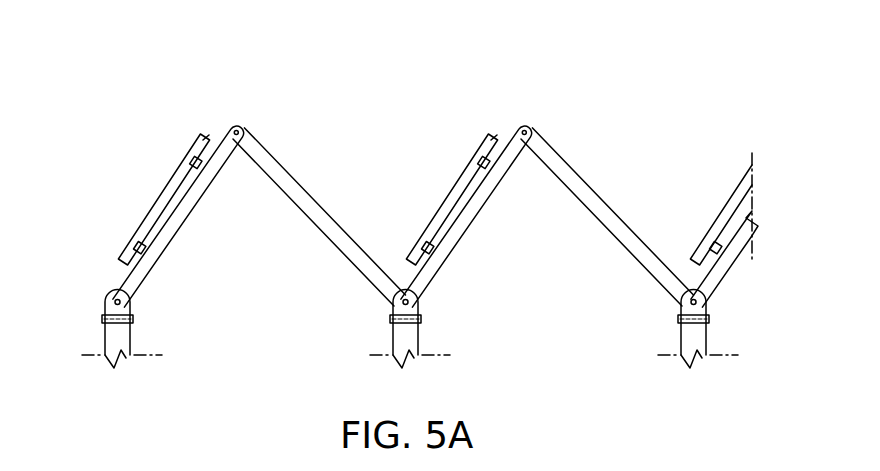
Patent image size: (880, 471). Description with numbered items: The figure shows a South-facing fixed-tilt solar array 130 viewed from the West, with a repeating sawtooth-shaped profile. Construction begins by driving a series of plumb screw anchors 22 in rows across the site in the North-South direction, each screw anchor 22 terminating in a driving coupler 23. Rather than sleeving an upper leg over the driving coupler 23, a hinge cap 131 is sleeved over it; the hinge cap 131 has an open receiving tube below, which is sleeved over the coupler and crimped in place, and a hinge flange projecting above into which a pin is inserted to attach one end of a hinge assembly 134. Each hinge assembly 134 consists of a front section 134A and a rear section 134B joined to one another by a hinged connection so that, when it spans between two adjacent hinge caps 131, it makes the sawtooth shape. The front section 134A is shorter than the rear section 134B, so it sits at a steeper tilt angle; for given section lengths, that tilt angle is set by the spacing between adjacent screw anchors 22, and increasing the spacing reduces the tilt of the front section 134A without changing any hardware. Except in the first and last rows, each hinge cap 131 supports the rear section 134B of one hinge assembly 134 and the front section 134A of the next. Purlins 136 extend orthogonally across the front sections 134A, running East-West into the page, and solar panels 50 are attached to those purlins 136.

The fixed-tilt array 130 is at (727, 50).
The hinge assembly 134 is at (306, 111).
The front section 134A is at (192, 208).
The rear section 134B is at (347, 236).
The purlin 136 is at (203, 165).
The solar panel 50 is at (163, 190).
The hinge cap 131 is at (131, 306).
The screw anchor 22 is at (131, 347).
The driving coupler 23 is at (101, 317).